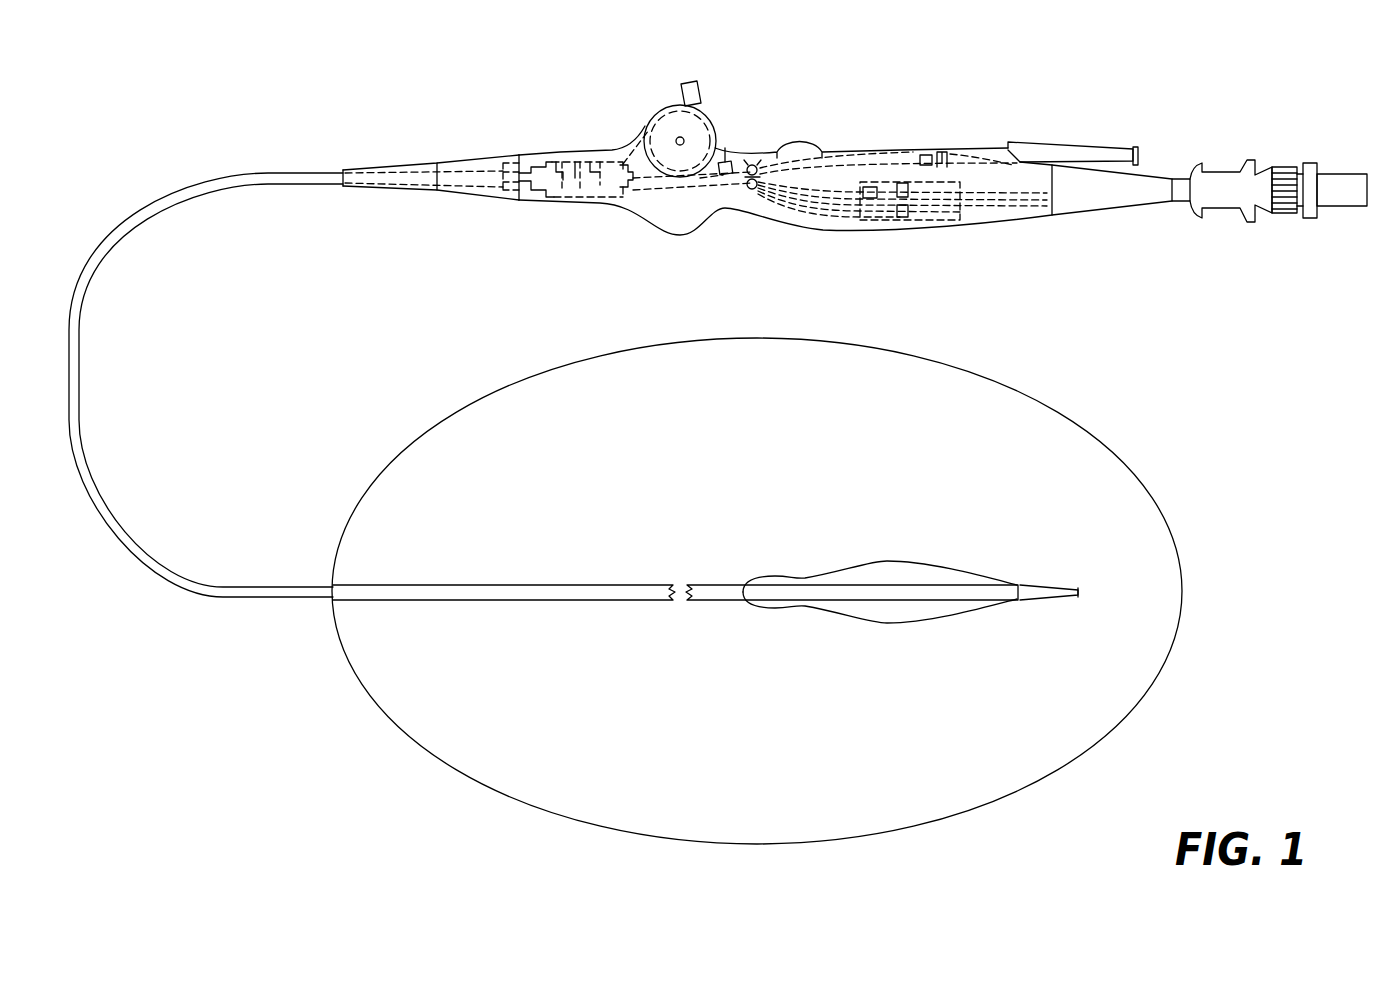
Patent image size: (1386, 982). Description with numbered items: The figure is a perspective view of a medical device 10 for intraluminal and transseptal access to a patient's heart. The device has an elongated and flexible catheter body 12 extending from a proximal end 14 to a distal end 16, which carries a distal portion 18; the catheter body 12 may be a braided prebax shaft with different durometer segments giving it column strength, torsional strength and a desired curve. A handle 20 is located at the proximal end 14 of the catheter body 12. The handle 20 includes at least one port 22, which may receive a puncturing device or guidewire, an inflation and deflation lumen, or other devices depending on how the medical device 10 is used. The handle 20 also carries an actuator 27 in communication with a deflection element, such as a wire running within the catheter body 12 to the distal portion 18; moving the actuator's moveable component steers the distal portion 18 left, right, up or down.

The medical device 10 is at (400, 84).
The catheter body 12 is at (187, 597).
The proximal end 14 is at (376, 212).
The distal end 16 is at (772, 637).
The distal portion 18 is at (1073, 535).
The handle 20 is at (864, 148).
The port 22 is at (1098, 150).
The actuator 27 is at (702, 128).